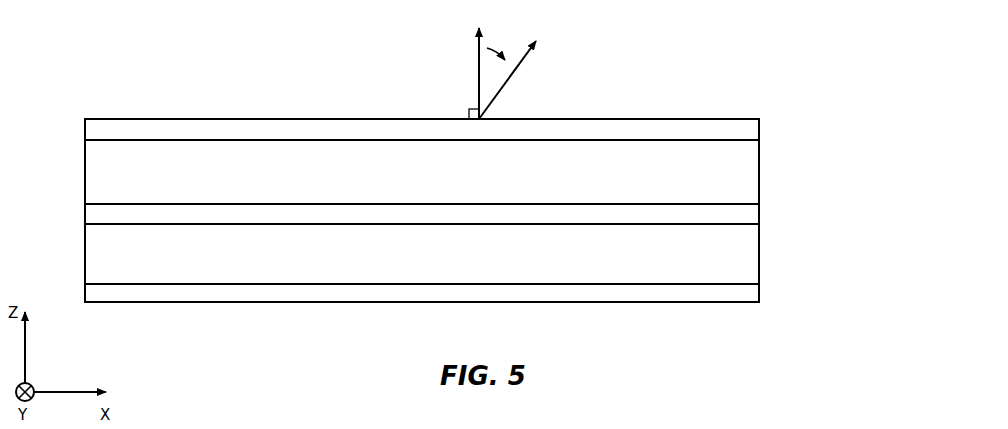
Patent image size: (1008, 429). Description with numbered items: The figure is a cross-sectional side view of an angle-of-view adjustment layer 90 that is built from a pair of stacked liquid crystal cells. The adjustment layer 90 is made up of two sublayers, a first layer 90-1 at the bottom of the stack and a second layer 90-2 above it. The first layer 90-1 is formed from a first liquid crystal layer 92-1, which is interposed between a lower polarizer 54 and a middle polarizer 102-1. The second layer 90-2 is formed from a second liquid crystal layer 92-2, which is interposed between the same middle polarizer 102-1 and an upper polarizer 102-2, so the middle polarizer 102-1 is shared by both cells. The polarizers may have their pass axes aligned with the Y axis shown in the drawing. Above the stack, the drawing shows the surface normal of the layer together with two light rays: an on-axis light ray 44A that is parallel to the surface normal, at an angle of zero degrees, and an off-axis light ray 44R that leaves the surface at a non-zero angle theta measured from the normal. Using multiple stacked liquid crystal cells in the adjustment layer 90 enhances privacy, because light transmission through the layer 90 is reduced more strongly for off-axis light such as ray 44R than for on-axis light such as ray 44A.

The angle-of-view adjustment layer 90 is at (68, 302).
The first layer 90-1 is at (847, 256).
The second layer 90-2 is at (854, 156).
The polarizer 102-2 is at (752, 131).
The second liquid crystal layer 92-2 is at (752, 173).
The polarizer 102-1 is at (752, 215).
The first liquid crystal layer 92-1 is at (752, 257).
The polarizer 54 is at (752, 297).
The on-axis light ray 44A is at (458, 66).
The off-axis light ray 44R is at (518, 70).